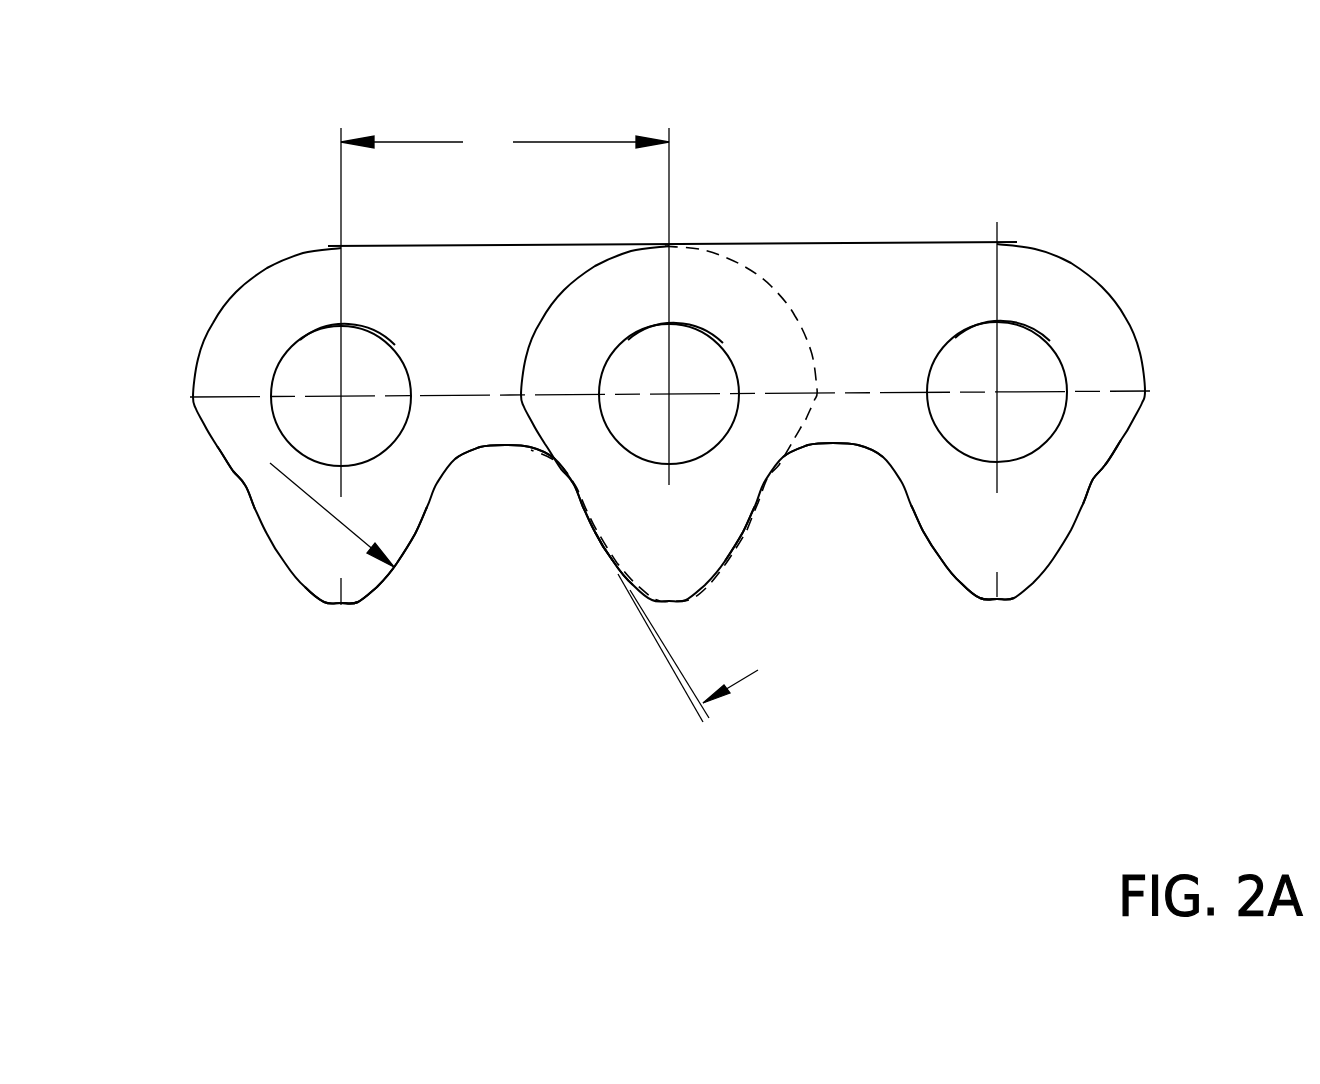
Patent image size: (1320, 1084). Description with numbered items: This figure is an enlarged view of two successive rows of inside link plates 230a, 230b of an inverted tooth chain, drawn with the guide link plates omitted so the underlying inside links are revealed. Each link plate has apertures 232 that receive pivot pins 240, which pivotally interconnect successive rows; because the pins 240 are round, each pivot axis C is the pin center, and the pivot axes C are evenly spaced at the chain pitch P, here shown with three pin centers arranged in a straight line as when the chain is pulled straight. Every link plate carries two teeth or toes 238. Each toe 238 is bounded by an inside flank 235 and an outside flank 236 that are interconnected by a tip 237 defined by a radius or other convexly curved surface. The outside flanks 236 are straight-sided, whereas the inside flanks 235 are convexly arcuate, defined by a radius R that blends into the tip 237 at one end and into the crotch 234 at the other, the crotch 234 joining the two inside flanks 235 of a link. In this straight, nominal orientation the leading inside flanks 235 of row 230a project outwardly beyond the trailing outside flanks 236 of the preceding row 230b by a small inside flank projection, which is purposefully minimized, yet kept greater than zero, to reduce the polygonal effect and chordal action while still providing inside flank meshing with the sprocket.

The row of inside link plates 230a is at (860, 270).
The row of inside link plates 230b is at (230, 348).
The aperture 232 is at (308, 335).
The crotch 234 is at (503, 447).
The inside flank 235 is at (597, 537).
The outside flank 236 is at (252, 493).
The tip 237 is at (353, 603).
The toe 238 is at (341, 604).
The pivot pin 240 is at (370, 372).
The pivot axis C is at (338, 396).
The chain pitch P is at (505, 140).
The radius R is at (320, 500).